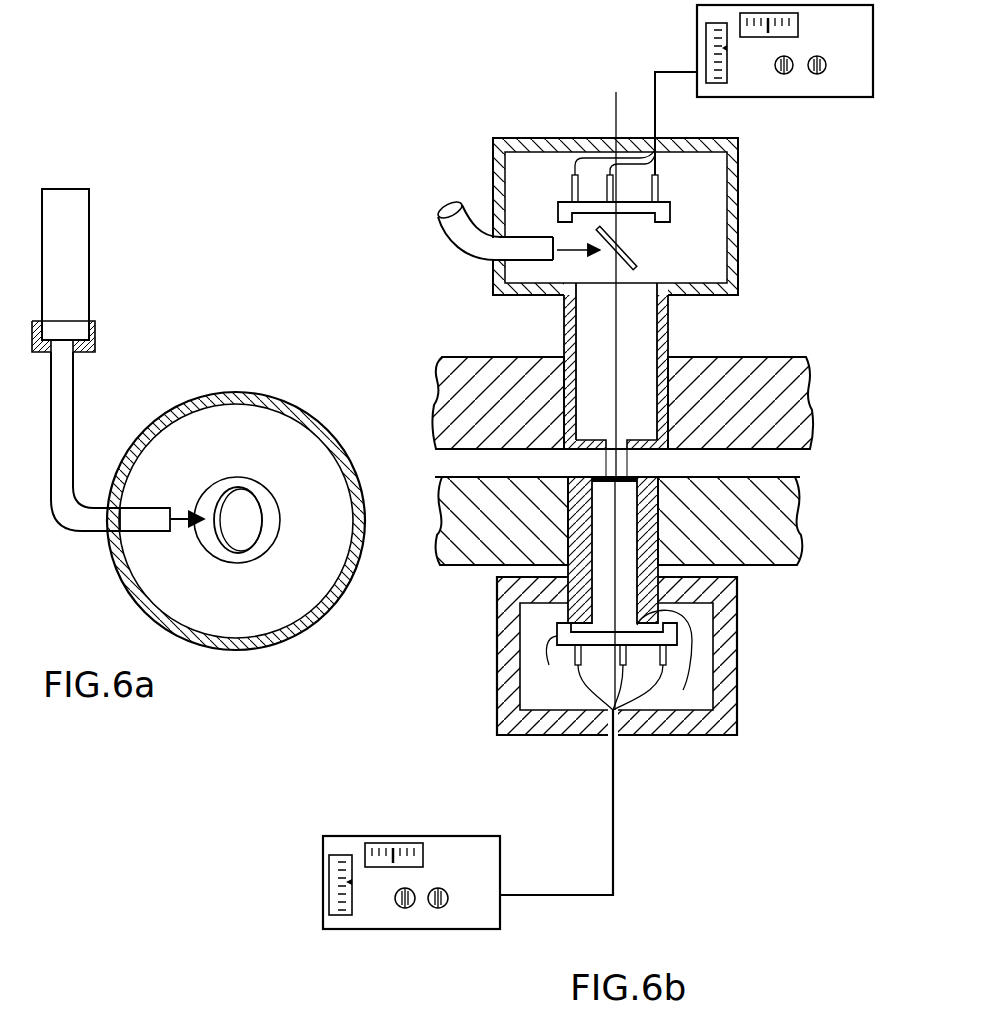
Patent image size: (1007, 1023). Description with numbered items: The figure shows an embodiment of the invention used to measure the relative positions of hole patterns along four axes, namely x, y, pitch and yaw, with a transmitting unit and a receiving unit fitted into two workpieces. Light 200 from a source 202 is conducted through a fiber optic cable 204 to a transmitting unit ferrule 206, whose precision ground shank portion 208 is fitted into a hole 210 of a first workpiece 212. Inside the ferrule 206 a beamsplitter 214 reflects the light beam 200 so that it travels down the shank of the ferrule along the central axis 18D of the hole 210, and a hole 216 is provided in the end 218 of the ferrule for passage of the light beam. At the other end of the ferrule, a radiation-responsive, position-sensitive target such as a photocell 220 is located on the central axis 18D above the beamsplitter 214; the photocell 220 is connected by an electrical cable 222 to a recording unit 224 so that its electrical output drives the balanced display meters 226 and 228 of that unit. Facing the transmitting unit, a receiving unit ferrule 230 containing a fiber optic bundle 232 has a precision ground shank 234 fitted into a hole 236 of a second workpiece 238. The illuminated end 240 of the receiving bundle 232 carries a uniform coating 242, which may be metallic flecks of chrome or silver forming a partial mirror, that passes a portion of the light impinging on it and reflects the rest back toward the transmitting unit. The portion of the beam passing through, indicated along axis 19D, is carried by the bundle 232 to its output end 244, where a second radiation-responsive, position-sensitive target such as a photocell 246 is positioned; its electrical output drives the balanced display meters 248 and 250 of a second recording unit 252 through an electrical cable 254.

In FIG. 6B, the central axis 18D is at (616, 103).
In FIG. 6B, the transmitted laser beam 19D is at (606, 684).
In FIG. 6A, the light beam 200 is at (192, 514).
In FIG. 6B, the light beam 200 is at (604, 252).
In FIG. 6A, the source 202 is at (89, 238).
In FIG. 6A, the fiber optic cable 204 is at (73, 388).
In FIG. 6B, the fiber optic cable 204 is at (470, 261).
In FIG. 6A, the transmitting unit ferrule 206 is at (272, 396).
In FIG. 6B, the transmitting unit ferrule 206 is at (738, 170).
In FIG. 6B, the shank portion 208 is at (668, 322).
In FIG. 6B, the hole 210 is at (564, 356).
In FIG. 6B, the first workpiece 212 is at (459, 356).
In FIG. 6A, the beamsplitter 214 is at (237, 563).
In FIG. 6B, the beamsplitter 214 is at (639, 265).
In FIG. 6B, the hole 216 is at (592, 440).
In FIG. 6B, the end of the ferrule 218 is at (668, 450).
In FIG. 6B, the photocell 220 is at (662, 222).
In FIG. 6B, the electrical cable 222 is at (672, 66).
In FIG. 6B, the recording unit 224 is at (815, 97).
In FIG. 6B, the balanced display meter 226 is at (727, 62).
In FIG. 6B, the balanced display meter 228 is at (798, 24).
In FIG. 6B, the receiving unit ferrule 230 is at (497, 643).
In FIG. 6B, the fiber optic bundle 232 is at (633, 565).
In FIG. 6B, the shank 234 is at (679, 568).
In FIG. 6B, the hole 236 is at (558, 568).
In FIG. 6B, the second workpiece 238 is at (770, 565).
In FIG. 6B, the illuminated end 240 is at (605, 477).
In FIG. 6B, the uniform coating 242 is at (617, 480).
In FIG. 6B, the output end 244 is at (633, 660).
In FIG. 6B, the photocell 246 is at (545, 663).
In FIG. 6B, the balanced display meter 248 is at (372, 895).
In FIG. 6B, the balanced display meter 250 is at (423, 857).
In FIG. 6B, the recording unit 252 is at (408, 929).
In FIG. 6B, the electrical cable 254 is at (613, 790).